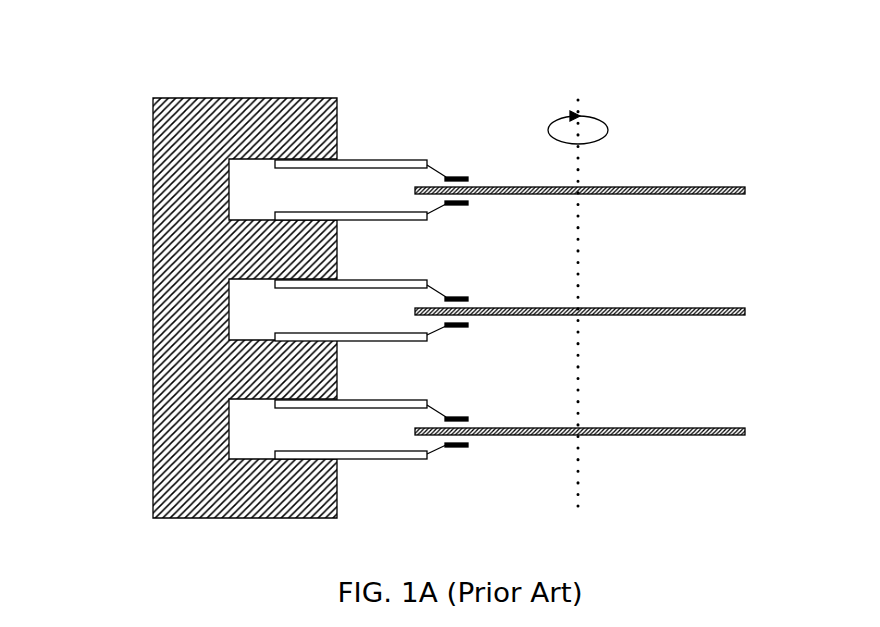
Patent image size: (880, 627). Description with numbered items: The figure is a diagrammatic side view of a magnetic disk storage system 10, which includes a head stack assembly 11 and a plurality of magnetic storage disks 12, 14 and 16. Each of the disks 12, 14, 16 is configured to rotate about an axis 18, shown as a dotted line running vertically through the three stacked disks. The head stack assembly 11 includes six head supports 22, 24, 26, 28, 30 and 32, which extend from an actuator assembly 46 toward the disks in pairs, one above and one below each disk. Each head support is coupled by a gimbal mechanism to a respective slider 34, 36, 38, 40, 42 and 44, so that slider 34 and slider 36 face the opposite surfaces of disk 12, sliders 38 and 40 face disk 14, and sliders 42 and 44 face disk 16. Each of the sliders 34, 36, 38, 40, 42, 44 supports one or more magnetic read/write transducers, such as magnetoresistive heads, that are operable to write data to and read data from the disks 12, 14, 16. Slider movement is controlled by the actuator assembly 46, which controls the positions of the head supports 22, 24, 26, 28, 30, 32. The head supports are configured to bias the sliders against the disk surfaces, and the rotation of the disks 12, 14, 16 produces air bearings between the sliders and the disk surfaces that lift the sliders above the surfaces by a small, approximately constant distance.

The magnetic disk storage system 10 is at (626, 68).
The head stack assembly 11 is at (120, 68).
The magnetic storage disk 12 is at (727, 187).
The magnetic storage disk 14 is at (727, 307).
The magnetic storage disk 16 is at (727, 427).
The axis 18 is at (579, 280).
The head support 22 is at (368, 158).
The head support 24 is at (345, 210).
The head support 26 is at (352, 278).
The head support 28 is at (343, 332).
The head support 30 is at (352, 398).
The head support 32 is at (343, 452).
The slider 34 is at (456, 177).
The slider 36 is at (456, 205).
The slider 38 is at (456, 296).
The slider 40 is at (456, 327).
The slider 42 is at (456, 416).
The slider 44 is at (456, 447).
The actuator assembly 46 is at (283, 97).